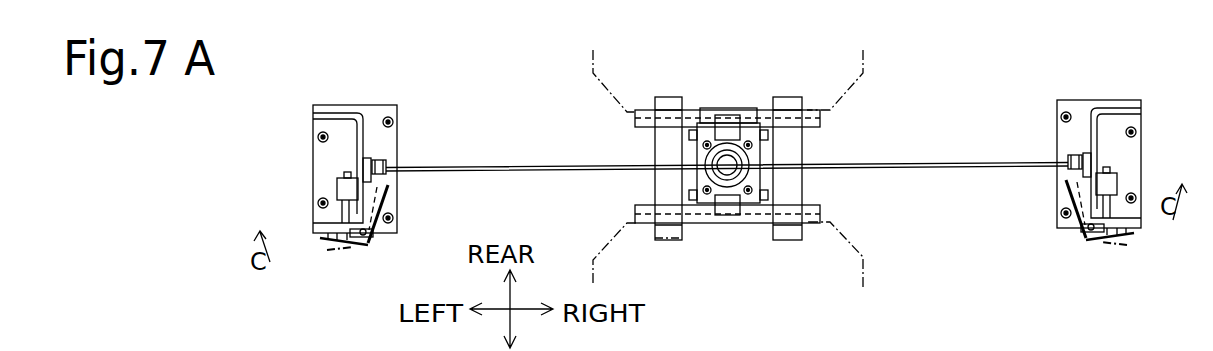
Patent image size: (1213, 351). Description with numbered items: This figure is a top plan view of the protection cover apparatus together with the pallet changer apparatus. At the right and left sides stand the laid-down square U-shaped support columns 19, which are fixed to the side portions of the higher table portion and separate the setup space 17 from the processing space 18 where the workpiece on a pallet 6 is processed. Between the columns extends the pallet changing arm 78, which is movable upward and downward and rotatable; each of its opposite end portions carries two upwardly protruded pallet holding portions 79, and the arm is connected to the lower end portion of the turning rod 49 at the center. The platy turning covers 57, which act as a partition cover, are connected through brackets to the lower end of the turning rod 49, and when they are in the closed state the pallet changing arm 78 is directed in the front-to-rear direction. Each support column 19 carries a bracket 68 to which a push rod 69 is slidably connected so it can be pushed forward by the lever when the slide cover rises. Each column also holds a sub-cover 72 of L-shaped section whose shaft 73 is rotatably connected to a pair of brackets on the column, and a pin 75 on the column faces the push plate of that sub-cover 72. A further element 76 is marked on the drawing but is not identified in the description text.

The pallet 6 is at (863, 62).
The setup space 17 is at (636, 341).
The processing space 18 is at (523, 90).
The support column 19 is at (333, 113).
The turning rod 49 is at (727, 143).
The turning cover 57 is at (571, 173).
The bracket 68 is at (337, 183).
The push rod 69 is at (345, 172).
The sub-cover 72 is at (387, 194).
The shaft 73 is at (375, 237).
The pin 75 is at (323, 238).
The base plate 76 is at (655, 251).
The pallet changing arm 78 is at (803, 148).
The pallet holding portion 79 is at (663, 97).